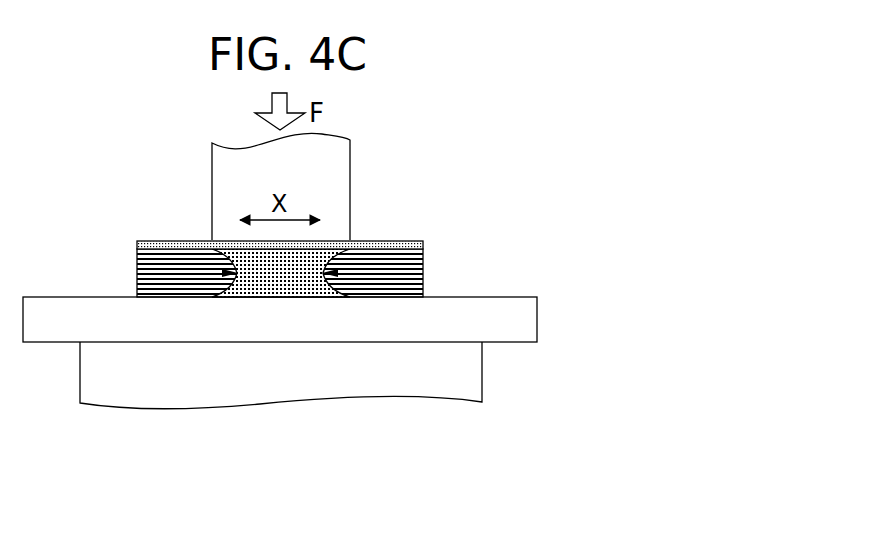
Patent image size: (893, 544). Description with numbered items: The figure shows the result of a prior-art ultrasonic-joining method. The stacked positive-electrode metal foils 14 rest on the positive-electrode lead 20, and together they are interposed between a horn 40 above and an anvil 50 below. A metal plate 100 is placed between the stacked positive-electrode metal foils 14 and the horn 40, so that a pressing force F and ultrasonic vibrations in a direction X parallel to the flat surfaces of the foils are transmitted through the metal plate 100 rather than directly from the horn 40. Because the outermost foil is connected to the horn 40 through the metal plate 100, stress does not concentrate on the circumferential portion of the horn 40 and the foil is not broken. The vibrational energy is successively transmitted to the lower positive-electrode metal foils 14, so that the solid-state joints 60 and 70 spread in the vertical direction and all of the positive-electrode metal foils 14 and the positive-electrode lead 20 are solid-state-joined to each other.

The positive-electrode metal foils 14 is at (436, 250).
The positive-electrode lead 20 is at (539, 320).
The horn 40 is at (352, 180).
The anvil 50 is at (484, 375).
The solid-state joint 60 is at (250, 262).
The solid-state joint 70 is at (283, 286).
The metal plate 100 is at (375, 240).